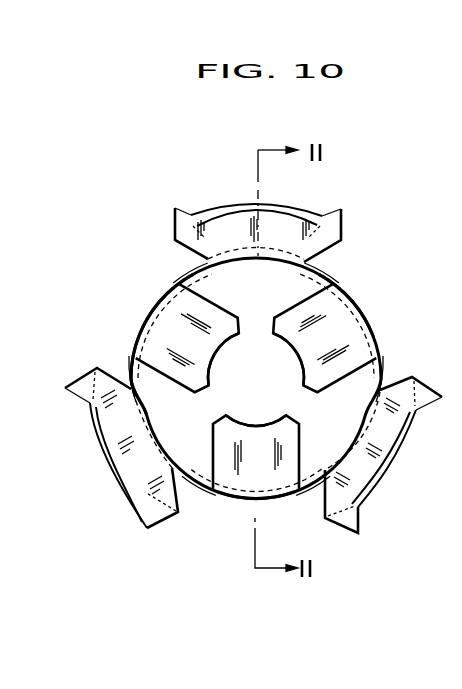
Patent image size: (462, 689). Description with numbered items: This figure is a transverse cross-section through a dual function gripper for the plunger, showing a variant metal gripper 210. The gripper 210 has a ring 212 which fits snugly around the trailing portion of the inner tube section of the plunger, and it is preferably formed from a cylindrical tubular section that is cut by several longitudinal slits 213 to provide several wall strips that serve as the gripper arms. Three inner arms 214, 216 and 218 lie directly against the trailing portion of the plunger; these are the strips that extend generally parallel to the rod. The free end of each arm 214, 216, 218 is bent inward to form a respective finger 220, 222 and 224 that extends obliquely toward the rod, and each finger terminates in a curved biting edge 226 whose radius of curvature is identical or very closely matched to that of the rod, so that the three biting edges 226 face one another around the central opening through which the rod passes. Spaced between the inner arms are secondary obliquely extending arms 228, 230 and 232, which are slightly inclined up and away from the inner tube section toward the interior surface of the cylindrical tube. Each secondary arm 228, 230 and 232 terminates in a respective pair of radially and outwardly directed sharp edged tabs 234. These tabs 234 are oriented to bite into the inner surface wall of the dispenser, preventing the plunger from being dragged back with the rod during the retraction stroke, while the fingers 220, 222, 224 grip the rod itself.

The metal gripper 210 is at (338, 190).
The ring 212 is at (130, 360).
The longitudinal slits 213 is at (182, 273).
The arm 214 is at (366, 316).
The arm 216 is at (146, 310).
The arm 218 is at (243, 500).
The finger 220 is at (292, 316).
The finger 222 is at (210, 300).
The finger 224 is at (219, 452).
The curved biting edge 226 is at (292, 353).
The secondary arm 228 is at (280, 228).
The secondary arm 230 is at (127, 452).
The secondary arm 232 is at (388, 447).
The sharp edged tabs 234 is at (174, 217).